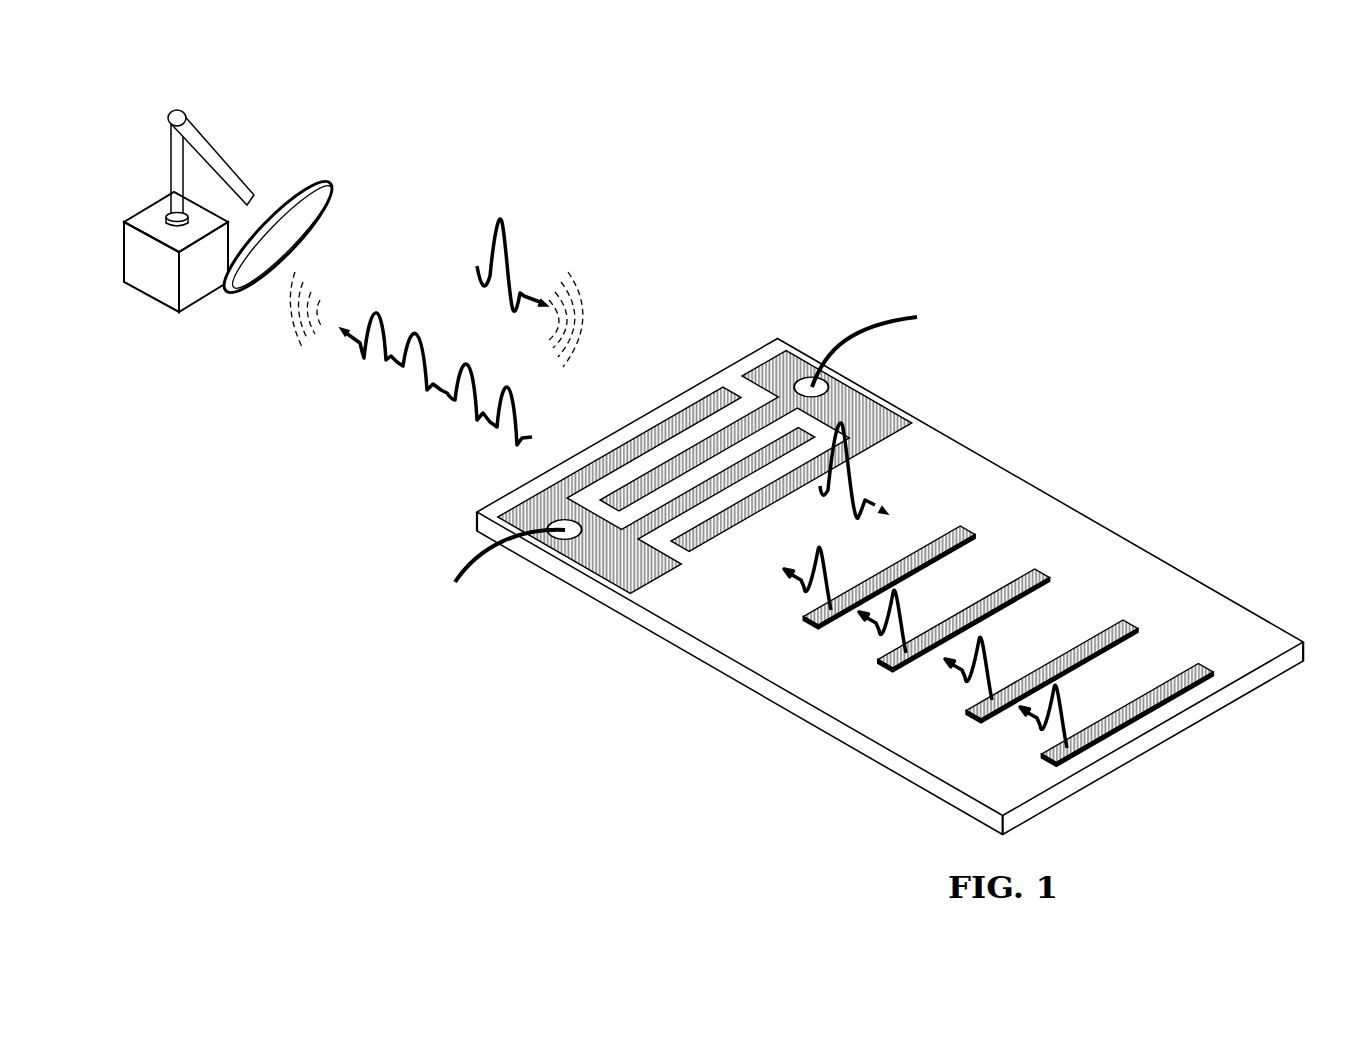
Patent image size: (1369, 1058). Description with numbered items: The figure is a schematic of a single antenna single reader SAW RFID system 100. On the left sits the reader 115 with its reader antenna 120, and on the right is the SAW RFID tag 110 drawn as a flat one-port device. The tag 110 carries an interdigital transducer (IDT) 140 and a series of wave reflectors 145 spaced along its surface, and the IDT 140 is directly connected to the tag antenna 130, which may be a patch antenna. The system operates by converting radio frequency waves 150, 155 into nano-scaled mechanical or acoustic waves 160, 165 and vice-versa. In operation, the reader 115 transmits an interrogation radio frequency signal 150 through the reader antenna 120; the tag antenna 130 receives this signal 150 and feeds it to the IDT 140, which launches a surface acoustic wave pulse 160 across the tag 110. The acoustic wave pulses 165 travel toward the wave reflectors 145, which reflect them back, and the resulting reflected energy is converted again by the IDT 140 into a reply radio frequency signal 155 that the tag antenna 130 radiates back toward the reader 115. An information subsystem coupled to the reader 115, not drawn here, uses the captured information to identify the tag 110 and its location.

The SAW RFID system 100 is at (1070, 277).
The SAW RFID tag 110 is at (1173, 558).
The reader 115 is at (150, 302).
The reader antenna 120 is at (292, 182).
The tag antenna 130 is at (455, 586).
The interdigital transducer (IDT) 140 is at (722, 401).
The wave reflectors 145 is at (963, 525).
The radio frequency wave 150 is at (500, 217).
The radio frequency wave 155 is at (390, 367).
The acoustic wave 160 is at (850, 477).
The acoustic wave 165 is at (803, 598).